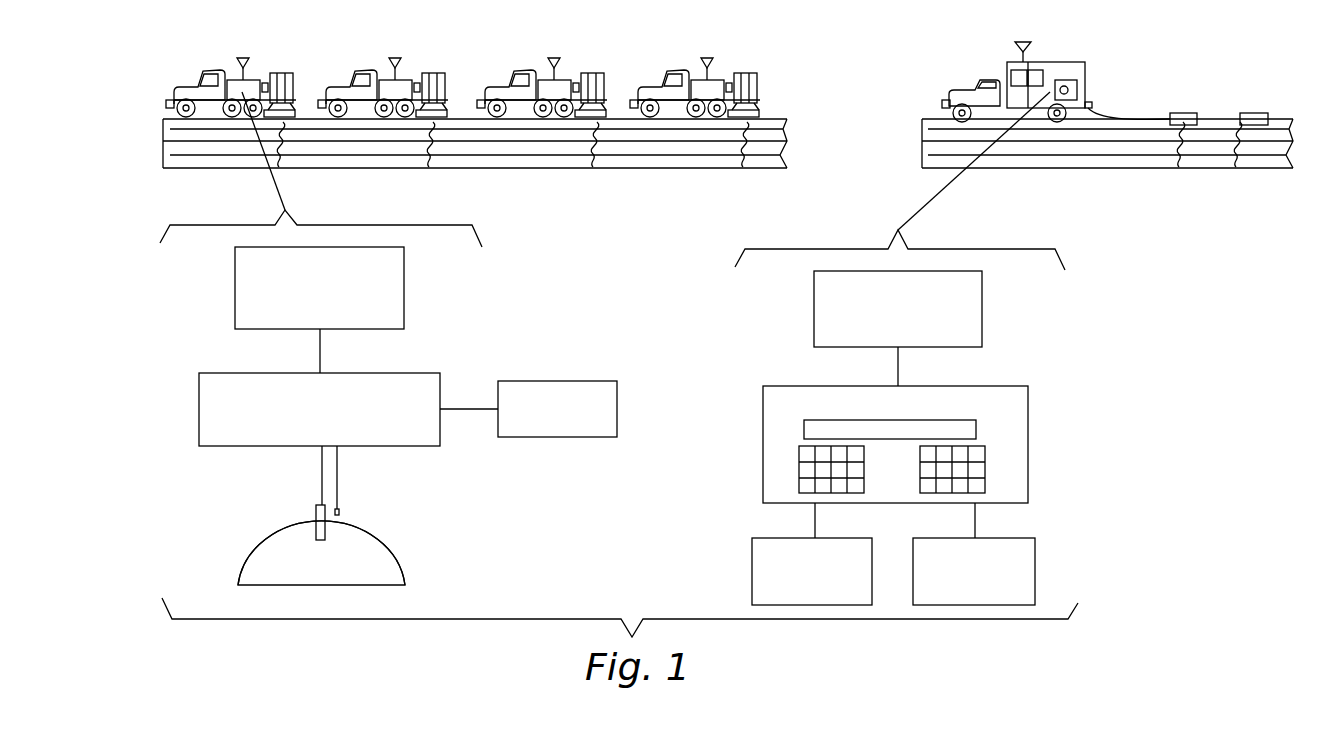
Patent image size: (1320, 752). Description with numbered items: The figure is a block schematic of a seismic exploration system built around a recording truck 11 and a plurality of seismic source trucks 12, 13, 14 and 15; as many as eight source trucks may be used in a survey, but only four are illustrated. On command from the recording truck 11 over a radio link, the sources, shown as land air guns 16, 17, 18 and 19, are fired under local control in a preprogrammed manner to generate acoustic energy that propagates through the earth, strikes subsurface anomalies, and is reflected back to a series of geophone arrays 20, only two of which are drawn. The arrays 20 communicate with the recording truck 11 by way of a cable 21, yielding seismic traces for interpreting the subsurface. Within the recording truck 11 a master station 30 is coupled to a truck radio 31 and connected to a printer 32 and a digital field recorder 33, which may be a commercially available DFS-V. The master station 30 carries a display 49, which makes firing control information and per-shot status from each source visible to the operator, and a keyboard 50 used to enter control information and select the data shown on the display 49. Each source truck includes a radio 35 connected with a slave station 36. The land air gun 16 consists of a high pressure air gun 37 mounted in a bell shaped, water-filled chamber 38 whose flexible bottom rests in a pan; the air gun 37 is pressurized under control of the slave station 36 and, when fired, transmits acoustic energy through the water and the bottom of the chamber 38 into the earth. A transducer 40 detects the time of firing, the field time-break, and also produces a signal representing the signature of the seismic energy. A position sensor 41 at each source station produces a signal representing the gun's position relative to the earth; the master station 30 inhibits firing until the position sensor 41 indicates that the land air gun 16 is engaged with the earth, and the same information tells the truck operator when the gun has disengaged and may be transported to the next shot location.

The recording truck 11 is at (1086, 64).
The seismic source truck 12 is at (228, 90).
The seismic source truck 13 is at (380, 90).
The seismic source truck 14 is at (538, 90).
The seismic source truck 15 is at (692, 90).
The land air gun 16 is at (300, 108).
The land air gun 17 is at (452, 108).
The land air gun 18 is at (612, 108).
The land air gun 19 is at (766, 110).
The geophone array 20 is at (1190, 113).
The cable 21 is at (1105, 112).
The master station 30 is at (906, 444).
The truck radio 31 is at (982, 328).
The printer 32 is at (1035, 568).
The digital field recorder 33 is at (752, 570).
The radio 35 is at (404, 279).
The slave station 36 is at (415, 373).
The high pressure air gun 37 is at (314, 508).
The chamber 38 is at (368, 532).
The transducer 40 is at (340, 510).
The position sensor 41 is at (264, 82).
The display 49 is at (976, 432).
The keyboard 50 is at (799, 468).